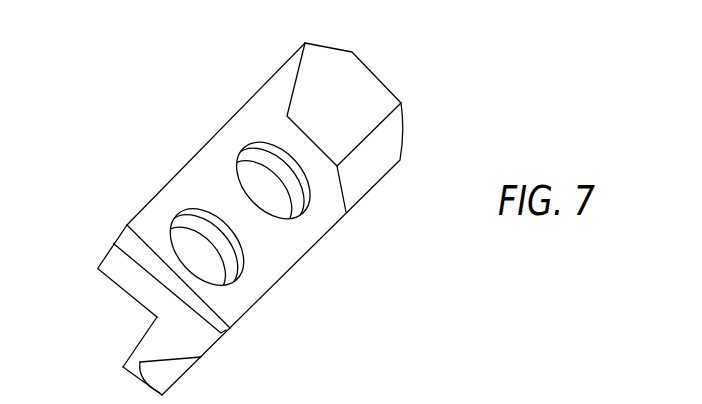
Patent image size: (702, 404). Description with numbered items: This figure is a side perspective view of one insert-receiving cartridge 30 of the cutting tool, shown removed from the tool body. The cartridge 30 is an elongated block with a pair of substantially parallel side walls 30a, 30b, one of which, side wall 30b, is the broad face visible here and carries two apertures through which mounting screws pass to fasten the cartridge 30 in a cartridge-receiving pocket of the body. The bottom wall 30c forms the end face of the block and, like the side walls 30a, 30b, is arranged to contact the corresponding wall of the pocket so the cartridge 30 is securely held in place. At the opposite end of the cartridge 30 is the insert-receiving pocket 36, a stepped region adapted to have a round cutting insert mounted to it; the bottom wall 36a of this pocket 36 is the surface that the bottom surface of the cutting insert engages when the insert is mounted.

The insert-receiving cartridge 30 is at (205, 108).
The side wall 30a is at (290, 273).
The side wall 30b is at (163, 183).
The bottom wall 30c is at (363, 100).
The insert-receiving pocket 36 is at (100, 351).
The bottom wall of the pocket 36a is at (140, 340).